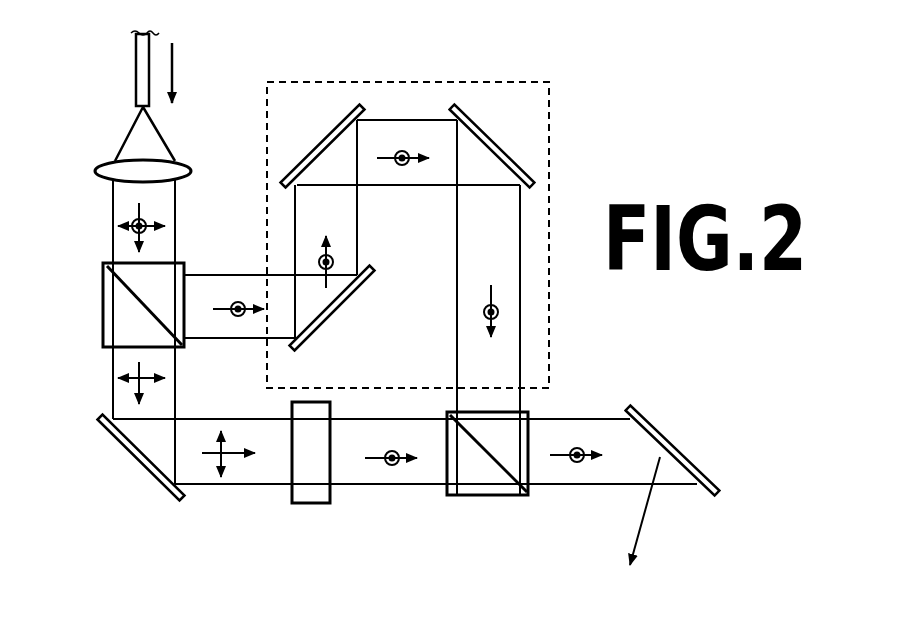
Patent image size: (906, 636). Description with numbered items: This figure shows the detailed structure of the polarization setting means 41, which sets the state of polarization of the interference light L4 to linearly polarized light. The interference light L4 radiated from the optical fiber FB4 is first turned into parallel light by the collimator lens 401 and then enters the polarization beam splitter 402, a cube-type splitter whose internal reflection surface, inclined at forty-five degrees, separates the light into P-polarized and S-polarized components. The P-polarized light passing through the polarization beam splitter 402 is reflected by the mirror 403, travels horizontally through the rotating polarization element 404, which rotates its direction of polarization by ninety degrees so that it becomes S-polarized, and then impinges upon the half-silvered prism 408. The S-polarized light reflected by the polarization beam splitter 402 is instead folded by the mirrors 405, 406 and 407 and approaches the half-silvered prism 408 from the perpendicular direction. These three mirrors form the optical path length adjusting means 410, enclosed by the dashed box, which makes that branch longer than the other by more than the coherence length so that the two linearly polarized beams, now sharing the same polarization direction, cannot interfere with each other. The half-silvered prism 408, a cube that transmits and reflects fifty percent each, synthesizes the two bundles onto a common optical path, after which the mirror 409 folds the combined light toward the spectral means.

The optical fiber FB4 is at (136, 60).
The interference light L4 is at (193, 73).
The polarization setting means 41 is at (450, 194).
The collimator lens 401 is at (95, 168).
The polarization beam splitter 402 is at (103, 292).
The mirror 403 is at (127, 450).
The rotating polarization element 404 is at (305, 505).
The mirror 405 is at (322, 327).
The mirror 406 is at (315, 152).
The mirror 407 is at (502, 155).
The half-silvered prism 408 is at (460, 497).
The mirror 409 is at (653, 423).
The optical path length adjusting means 410 is at (548, 97).